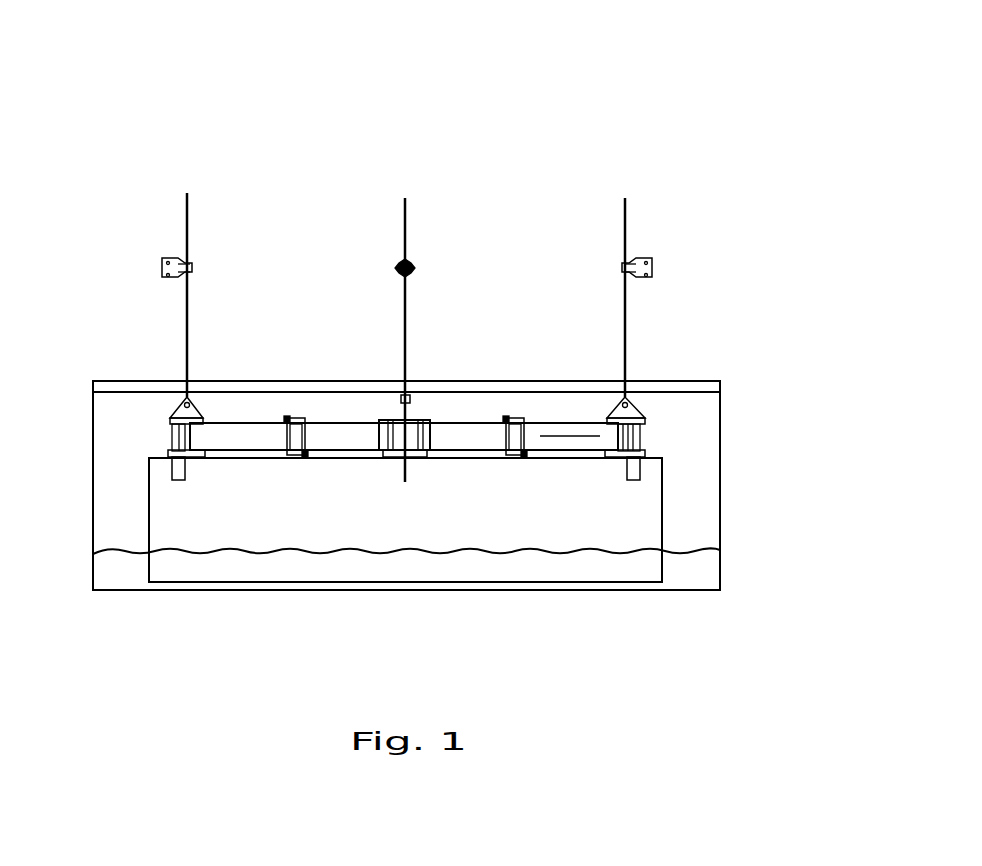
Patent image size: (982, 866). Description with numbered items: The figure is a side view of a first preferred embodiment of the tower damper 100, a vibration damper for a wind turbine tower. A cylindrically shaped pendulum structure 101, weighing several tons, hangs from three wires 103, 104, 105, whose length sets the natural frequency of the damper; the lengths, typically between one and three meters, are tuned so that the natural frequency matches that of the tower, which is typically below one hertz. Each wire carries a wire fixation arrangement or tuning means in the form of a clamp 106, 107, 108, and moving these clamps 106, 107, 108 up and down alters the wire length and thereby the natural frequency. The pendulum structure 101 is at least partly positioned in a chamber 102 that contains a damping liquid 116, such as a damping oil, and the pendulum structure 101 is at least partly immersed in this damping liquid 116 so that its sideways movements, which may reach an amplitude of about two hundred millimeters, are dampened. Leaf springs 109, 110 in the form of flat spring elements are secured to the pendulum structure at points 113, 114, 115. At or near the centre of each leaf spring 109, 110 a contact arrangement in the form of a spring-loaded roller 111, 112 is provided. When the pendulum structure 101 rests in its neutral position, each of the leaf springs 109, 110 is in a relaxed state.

The tower damper 100 is at (655, 94).
The pendulum structure 101 is at (548, 538).
The chamber 102 is at (708, 540).
The wire 103 is at (187, 290).
The wire 104 is at (405, 328).
The wire 105 is at (625, 330).
The clamp 106 is at (160, 267).
The clamp 107 is at (415, 268).
The clamp 108 is at (652, 268).
The leaf spring 109 is at (247, 435).
The leaf spring 110 is at (567, 432).
The spring-loaded roller 111 is at (297, 420).
The spring-loaded roller 112 is at (540, 432).
The securing point 113 is at (165, 440).
The securing point 114 is at (412, 400).
The securing point 115 is at (642, 440).
The damping liquid 116 is at (128, 555).